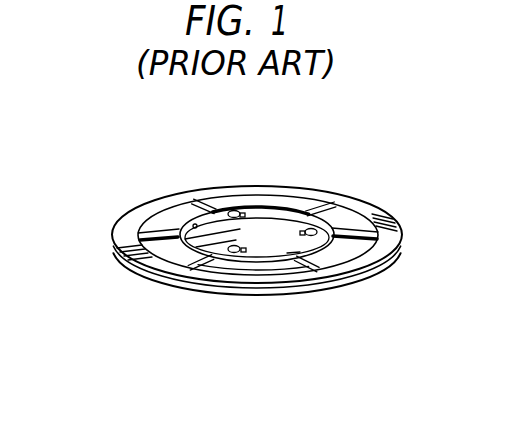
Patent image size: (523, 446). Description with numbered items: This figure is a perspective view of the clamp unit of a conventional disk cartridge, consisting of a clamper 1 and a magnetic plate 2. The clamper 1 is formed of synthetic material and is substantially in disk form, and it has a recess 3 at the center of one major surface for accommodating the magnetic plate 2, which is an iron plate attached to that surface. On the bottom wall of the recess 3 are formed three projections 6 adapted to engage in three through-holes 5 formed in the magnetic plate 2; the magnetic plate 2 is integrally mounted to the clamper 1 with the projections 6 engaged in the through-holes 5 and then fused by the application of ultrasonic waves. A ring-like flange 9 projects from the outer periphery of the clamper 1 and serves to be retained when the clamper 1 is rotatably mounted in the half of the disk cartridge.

The clamper 1 is at (374, 206).
The magnetic plate 2 is at (277, 218).
The recess 3 is at (165, 214).
The through-holes 5 is at (248, 211).
The projections 6 is at (232, 209).
The ring-like flange 9 is at (385, 262).